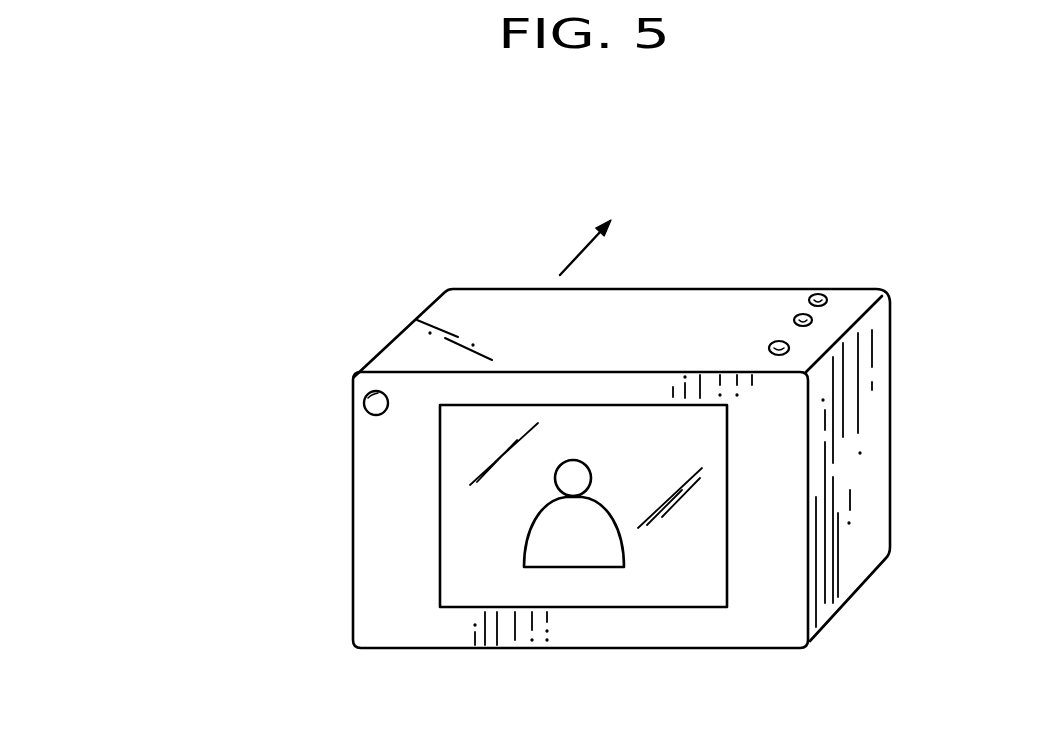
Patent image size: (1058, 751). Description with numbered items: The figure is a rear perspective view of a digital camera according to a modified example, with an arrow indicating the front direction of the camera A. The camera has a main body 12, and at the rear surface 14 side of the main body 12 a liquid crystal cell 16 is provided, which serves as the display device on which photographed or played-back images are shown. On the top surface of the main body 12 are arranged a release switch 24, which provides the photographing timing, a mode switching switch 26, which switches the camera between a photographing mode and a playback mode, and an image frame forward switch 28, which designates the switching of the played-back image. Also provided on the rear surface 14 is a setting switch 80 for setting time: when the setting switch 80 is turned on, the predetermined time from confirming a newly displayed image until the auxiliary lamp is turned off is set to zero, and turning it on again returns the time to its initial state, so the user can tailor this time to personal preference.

The main body 12 is at (873, 458).
The rear surface 14 is at (770, 615).
The liquid crystal cell 16 is at (641, 607).
The release switch 24 is at (775, 342).
The mode switching switch 26 is at (802, 314).
The image frame forward switch 28 is at (820, 294).
The setting switch 80 is at (378, 403).
The camera unit A is at (573, 262).